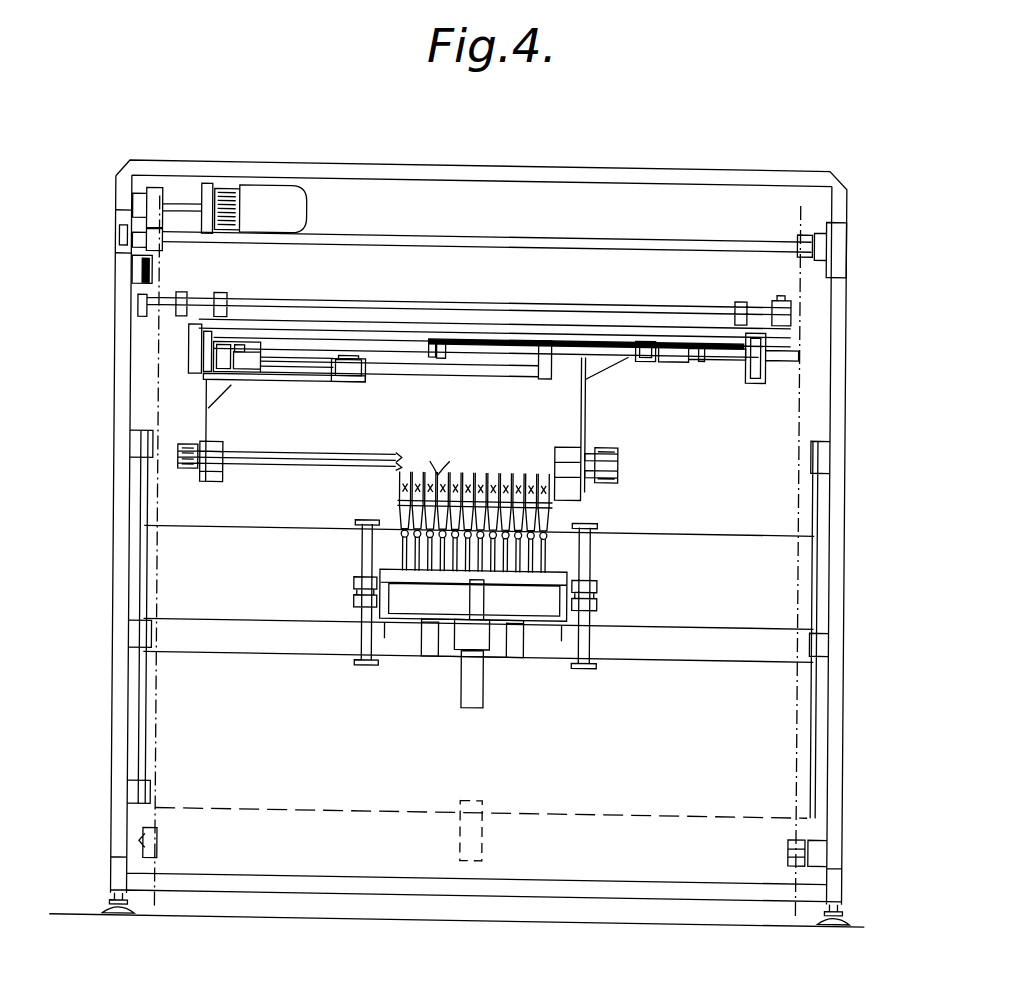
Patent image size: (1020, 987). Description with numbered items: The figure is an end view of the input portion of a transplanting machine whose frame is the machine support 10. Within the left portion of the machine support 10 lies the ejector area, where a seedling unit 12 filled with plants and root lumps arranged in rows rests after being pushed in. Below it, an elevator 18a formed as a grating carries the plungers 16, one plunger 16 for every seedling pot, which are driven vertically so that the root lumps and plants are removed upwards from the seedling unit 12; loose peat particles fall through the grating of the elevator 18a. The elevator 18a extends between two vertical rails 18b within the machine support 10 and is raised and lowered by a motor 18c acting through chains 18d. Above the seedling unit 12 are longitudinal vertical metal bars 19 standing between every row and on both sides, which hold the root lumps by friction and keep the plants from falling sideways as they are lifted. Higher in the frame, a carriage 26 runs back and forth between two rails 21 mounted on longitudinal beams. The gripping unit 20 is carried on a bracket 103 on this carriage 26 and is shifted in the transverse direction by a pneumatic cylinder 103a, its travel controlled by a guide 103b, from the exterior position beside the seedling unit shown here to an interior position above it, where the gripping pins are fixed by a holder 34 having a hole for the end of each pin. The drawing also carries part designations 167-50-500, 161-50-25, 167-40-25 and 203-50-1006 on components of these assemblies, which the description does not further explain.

The machine support 10 is at (113, 743).
The seedling unit 12 is at (397, 505).
The plungers 16 is at (560, 539).
The elevator 18a is at (307, 657).
The vertical rails 18b is at (140, 655).
The motor 18c is at (300, 204).
The chains 18d is at (162, 743).
The longitudinal vertical metal bars 19 is at (444, 454).
The gripping unit 20 is at (224, 479).
The rails 21 is at (205, 348).
The carriage 26 is at (215, 376).
The holder 34 is at (568, 440).
The bracket 103 is at (218, 422).
The pneumatic cylinder 103a is at (565, 342).
The guide 103b is at (503, 364).
The linear actuator 167-50-500 is at (670, 381).
The bearing block 161-50-25 is at (761, 376).
The clamp plates 167-40-25 is at (649, 466).
The lifting cylinder 203-50-1006 is at (512, 741).